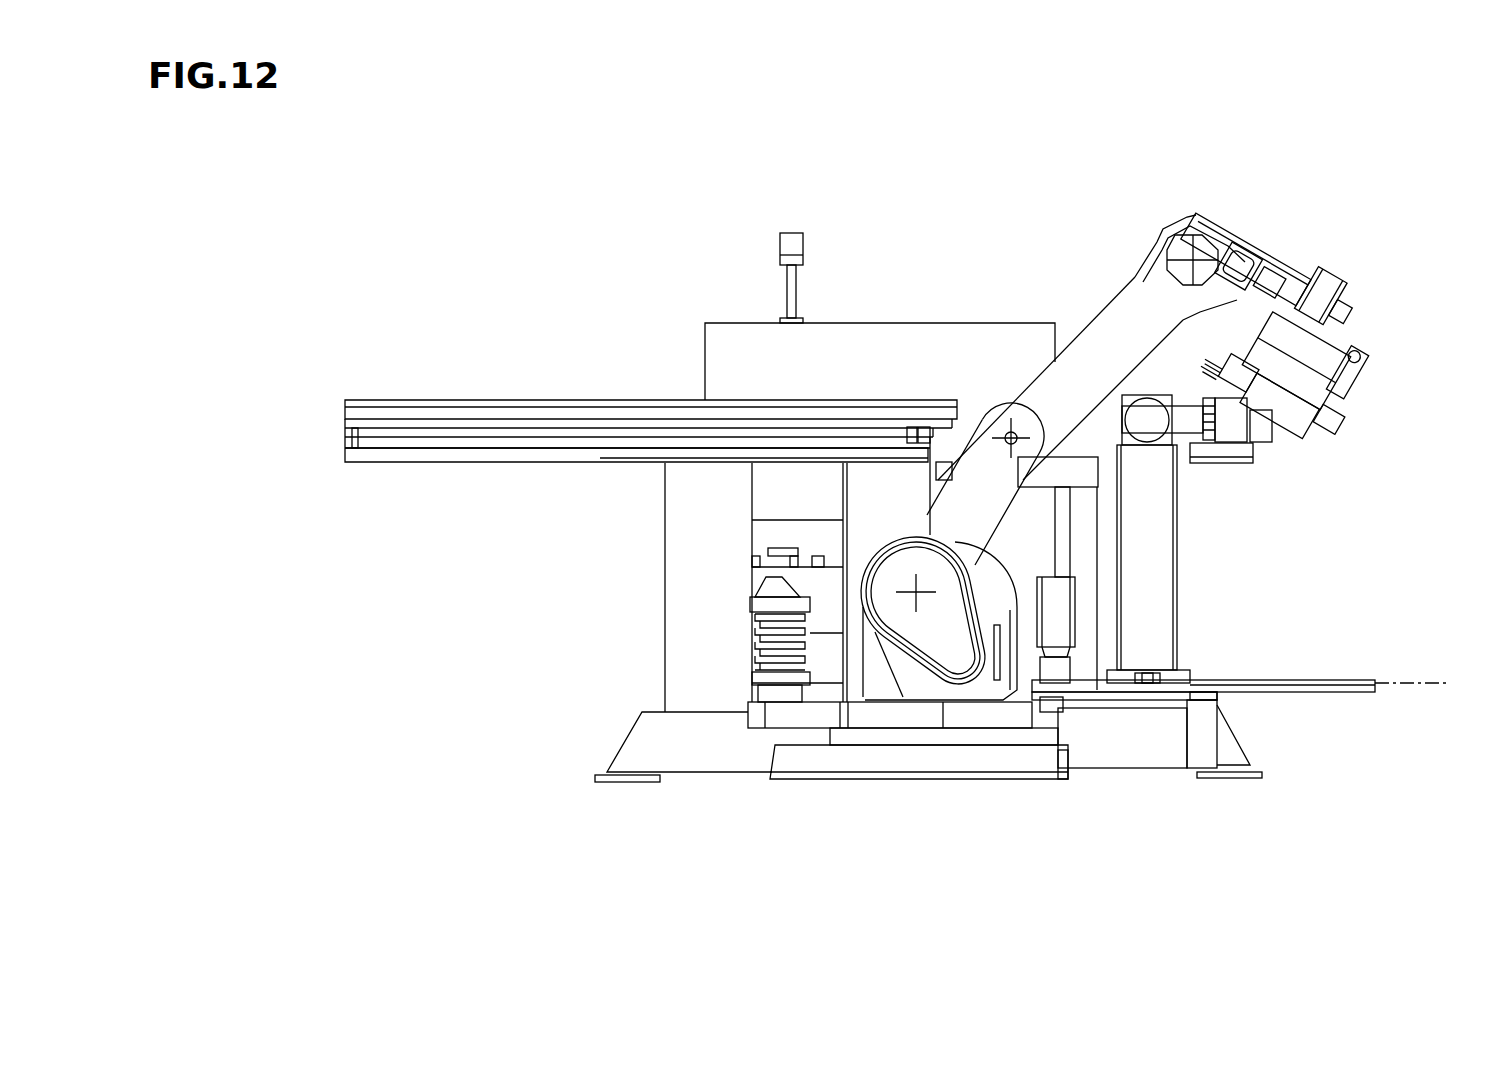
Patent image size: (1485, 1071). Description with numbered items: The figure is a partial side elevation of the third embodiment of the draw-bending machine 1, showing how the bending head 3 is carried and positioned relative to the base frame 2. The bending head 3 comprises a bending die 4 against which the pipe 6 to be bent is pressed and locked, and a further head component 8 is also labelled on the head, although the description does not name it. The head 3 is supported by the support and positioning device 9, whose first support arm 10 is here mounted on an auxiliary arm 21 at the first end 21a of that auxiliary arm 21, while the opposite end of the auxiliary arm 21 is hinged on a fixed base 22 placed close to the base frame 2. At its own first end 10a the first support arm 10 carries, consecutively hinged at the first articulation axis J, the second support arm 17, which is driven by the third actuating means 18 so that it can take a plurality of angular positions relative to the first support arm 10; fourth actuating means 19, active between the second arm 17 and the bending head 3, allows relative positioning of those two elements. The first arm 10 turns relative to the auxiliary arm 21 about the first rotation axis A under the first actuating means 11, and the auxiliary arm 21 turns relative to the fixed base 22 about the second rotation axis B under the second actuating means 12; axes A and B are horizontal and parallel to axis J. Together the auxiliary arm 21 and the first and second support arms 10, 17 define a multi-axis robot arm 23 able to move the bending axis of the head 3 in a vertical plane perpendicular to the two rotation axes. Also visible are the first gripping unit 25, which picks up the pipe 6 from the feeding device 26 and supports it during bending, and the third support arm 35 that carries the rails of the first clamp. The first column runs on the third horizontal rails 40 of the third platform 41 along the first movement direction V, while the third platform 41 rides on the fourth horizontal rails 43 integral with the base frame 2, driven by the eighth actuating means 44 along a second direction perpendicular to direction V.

The draw-bending machine 1 is at (377, 763).
The base frame 2 is at (620, 740).
The bending head 3 is at (1280, 407).
The bending die 4 is at (1227, 373).
The pipe 6 is at (1340, 417).
The spindle motor 8 is at (1333, 283).
The support and positioning device 9 is at (1016, 276).
The first support arm 10 is at (1095, 307).
The first end of the first support arm 10a is at (1162, 232).
The first actuating means 11 is at (948, 630).
The second actuating means 12 is at (908, 613).
The second support arm 17 is at (1287, 262).
The third actuating means 18 is at (1182, 247).
The fourth actuating means 19 is at (1242, 265).
The auxiliary arm 21 is at (918, 507).
The first end of the auxiliary arm 21a is at (925, 518).
The fixed base 22 is at (750, 735).
The multi-axis robot arm 23 is at (937, 817).
The first gripping unit 25 is at (1287, 458).
The feeding device 26 is at (485, 400).
The third support arm 35 is at (1165, 427).
The third horizontal rails 40 is at (1347, 678).
The third platform 41 is at (1283, 695).
The fourth horizontal rails 43 is at (1203, 707).
The eighth actuating means 44 is at (1057, 617).
The first rotation axis A is at (1012, 425).
The second rotation axis B is at (916, 575).
The first articulation axis J is at (1185, 247).
The first movement direction V is at (1410, 683).